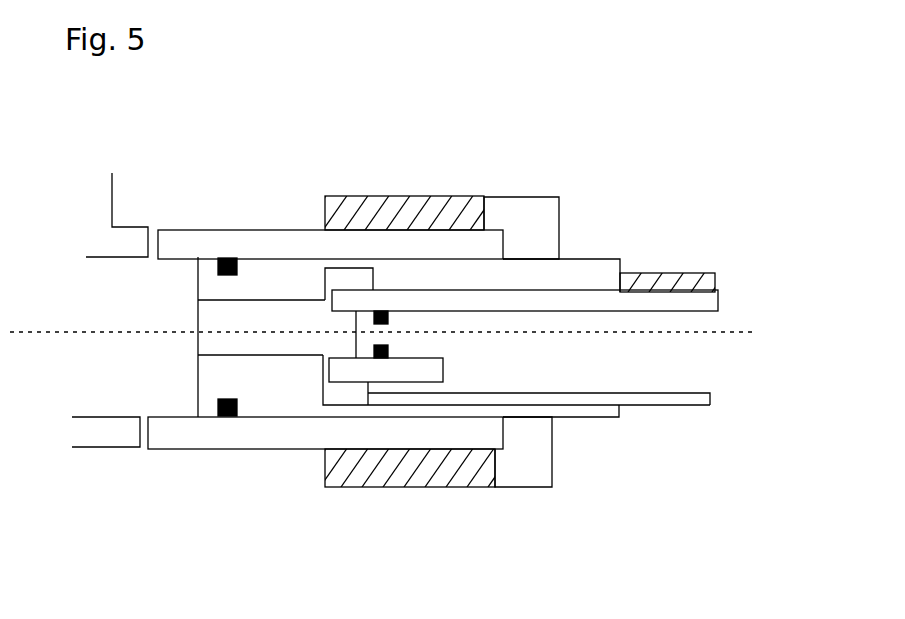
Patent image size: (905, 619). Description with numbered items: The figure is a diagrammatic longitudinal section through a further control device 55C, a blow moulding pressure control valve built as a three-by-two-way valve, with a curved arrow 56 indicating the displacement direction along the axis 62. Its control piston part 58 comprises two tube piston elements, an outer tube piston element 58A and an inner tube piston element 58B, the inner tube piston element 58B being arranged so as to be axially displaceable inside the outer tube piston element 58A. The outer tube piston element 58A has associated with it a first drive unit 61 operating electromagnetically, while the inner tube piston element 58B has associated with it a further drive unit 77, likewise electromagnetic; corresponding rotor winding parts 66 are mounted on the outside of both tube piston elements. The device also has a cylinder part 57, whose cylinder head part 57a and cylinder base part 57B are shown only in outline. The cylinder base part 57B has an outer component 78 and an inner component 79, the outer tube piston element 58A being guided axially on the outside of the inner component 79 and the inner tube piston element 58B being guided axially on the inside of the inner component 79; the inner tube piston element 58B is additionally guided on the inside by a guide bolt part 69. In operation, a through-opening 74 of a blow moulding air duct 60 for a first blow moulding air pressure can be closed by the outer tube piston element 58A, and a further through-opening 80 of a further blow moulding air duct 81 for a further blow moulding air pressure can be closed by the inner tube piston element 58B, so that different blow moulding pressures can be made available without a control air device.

The further control device 55C is at (641, 149).
The axial direction 56 is at (375, 566).
The cylinder part 57 is at (554, 531).
The cylinder head part 57a is at (75, 437).
The cylinder base part 57B is at (639, 470).
The control piston part 58 is at (228, 502).
The outer tube piston element 58A is at (262, 243).
The inner tube piston element 58B is at (563, 298).
The blow moulding air duct 60 is at (142, 317).
The first drive unit 61 is at (425, 133).
The rotation axis 62 is at (31, 329).
The rotor winding part 66 is at (410, 206).
The guide bolt part 69 is at (675, 323).
The through-opening 74 is at (153, 230).
The further drive unit 77 is at (721, 251).
The outer component 78 is at (546, 208).
The inner component 79 is at (511, 277).
The further through-opening 80 is at (325, 373).
The further blow moulding air duct 81 is at (487, 398).